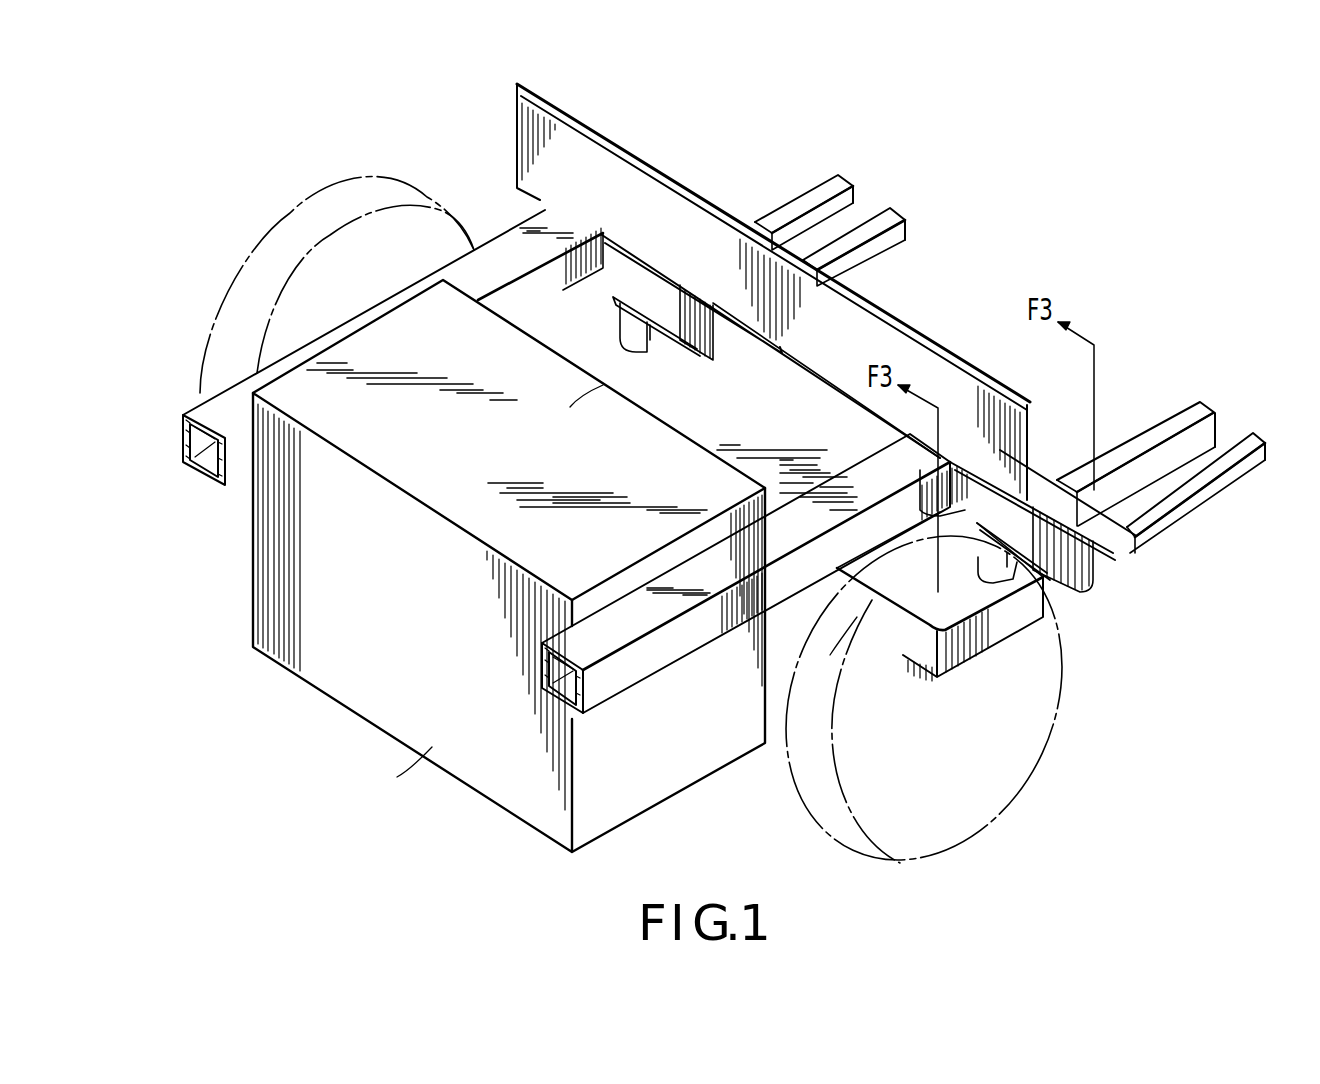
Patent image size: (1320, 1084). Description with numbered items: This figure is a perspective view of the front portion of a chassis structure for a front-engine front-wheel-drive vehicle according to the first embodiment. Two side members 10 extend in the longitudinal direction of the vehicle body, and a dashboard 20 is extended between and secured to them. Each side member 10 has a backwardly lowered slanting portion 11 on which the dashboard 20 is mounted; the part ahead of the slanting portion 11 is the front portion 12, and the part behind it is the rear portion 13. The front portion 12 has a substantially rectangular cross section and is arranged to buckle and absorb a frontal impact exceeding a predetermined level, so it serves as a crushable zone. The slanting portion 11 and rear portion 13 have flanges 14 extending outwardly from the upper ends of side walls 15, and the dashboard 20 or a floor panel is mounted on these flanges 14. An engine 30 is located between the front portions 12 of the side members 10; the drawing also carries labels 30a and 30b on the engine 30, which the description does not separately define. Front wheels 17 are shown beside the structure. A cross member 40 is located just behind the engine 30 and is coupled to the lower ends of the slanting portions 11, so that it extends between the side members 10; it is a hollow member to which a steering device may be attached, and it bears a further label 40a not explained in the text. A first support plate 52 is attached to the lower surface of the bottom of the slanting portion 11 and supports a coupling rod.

The side members 10 is at (183, 403).
The slanting portion 11 is at (710, 333).
The front portion 12 is at (513, 242).
The rear portion 13 is at (1016, 350).
The flanges 14 is at (793, 203).
The side walls 15 is at (847, 217).
The front wheels 17 is at (257, 238).
The dashboard 20 is at (612, 162).
The engine 30 is at (312, 662).
The front surface of box 30a is at (404, 780).
The top surface of box 30b is at (576, 416).
The cross member 40 is at (1023, 630).
The surface of plate 40a is at (833, 651).
The first support plate 52 is at (647, 357).